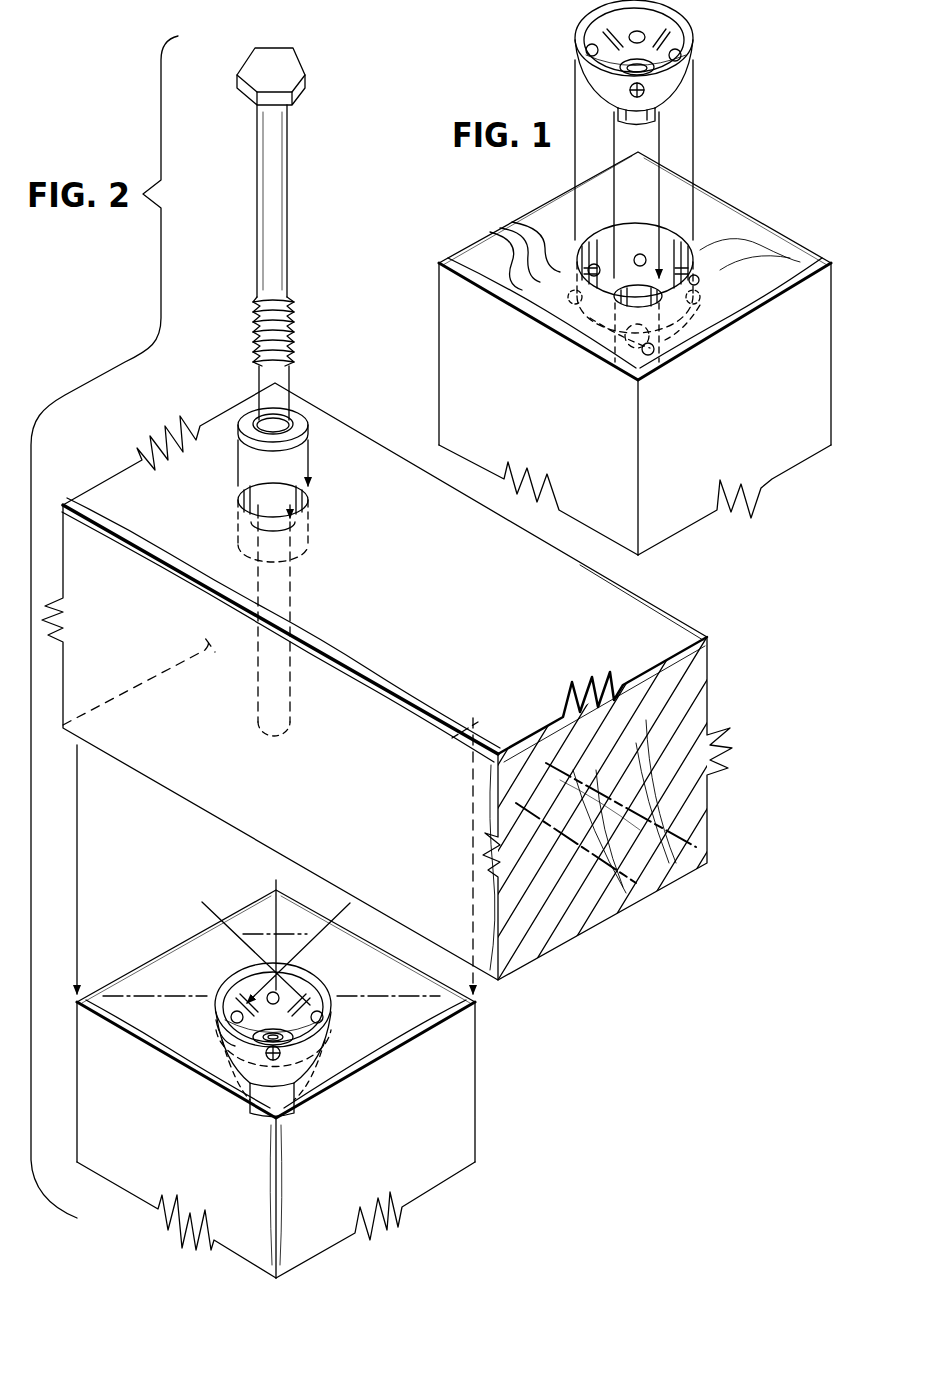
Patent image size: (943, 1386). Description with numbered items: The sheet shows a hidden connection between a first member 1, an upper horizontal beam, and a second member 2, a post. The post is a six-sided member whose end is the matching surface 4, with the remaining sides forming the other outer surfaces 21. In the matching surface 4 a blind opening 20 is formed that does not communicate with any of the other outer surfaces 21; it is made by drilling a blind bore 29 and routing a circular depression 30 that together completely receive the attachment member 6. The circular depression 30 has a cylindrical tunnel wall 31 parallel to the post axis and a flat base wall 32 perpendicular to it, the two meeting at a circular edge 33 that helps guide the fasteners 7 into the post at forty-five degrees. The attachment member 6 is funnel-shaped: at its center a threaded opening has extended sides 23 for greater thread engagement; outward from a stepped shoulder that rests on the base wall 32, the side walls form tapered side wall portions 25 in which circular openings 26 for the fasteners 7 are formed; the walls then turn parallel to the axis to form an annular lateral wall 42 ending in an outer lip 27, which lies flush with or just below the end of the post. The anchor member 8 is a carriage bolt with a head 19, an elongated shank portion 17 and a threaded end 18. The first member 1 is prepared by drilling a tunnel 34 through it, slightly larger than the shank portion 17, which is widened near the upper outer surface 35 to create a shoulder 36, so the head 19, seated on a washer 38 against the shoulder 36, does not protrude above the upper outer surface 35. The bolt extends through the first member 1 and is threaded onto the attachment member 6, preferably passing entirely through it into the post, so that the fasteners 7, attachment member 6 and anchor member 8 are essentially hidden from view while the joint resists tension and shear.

In FIG. 2, the first member 1 is at (322, 405).
In FIG. 1, the second member 2 is at (498, 224).
In FIG. 2, the second member 2 is at (478, 1074).
In FIG. 1, the matching surface 4 is at (790, 246).
In FIG. 2, the matching surface 4 is at (146, 968).
In FIG. 1, the attachment member 6 is at (690, 88).
In FIG. 2, the attachment member 6 is at (334, 987).
In FIG. 2, the fasteners 7 is at (208, 908).
In FIG. 2, the anchor member 8 is at (303, 230).
In FIG. 2, the shank portion 17 is at (290, 260).
In FIG. 2, the threaded end 18 is at (296, 335).
In FIG. 2, the head 19 is at (302, 68).
In FIG. 1, the blind opening 20 is at (668, 242).
In FIG. 1, the other outer surfaces 21 is at (452, 312).
In FIG. 2, the other outer surfaces 21 is at (96, 1055).
In FIG. 1, the extended sides 23 is at (660, 110).
In FIG. 1, the tapered side wall portions 25 is at (660, 42).
In FIG. 2, the tapered side wall portions 25 is at (225, 1050).
In FIG. 1, the openings 26 is at (642, 35).
In FIG. 2, the openings 26 is at (322, 1016).
In FIG. 1, the outer lip 27 is at (694, 52).
In FIG. 2, the outer lip 27 is at (300, 978).
In FIG. 1, the blind bore 29 is at (660, 364).
In FIG. 1, the circular depression 30 is at (696, 262).
In FIG. 1, the tunnel wall 31 is at (712, 278).
In FIG. 1, the base wall 32 is at (622, 272).
In FIG. 1, the circular edge 33 is at (588, 266).
In FIG. 2, the circular edge 33 is at (325, 1050).
In FIG. 2, the tunnel 34 is at (296, 592).
In FIG. 2, the upper outer surface 35 is at (632, 612).
In FIG. 2, the shoulder 36 is at (304, 542).
In FIG. 2, the washer 38 is at (302, 432).
In FIG. 1, the lateral wall 42 is at (600, 28).
In FIG. 2, the lateral wall 42 is at (230, 988).